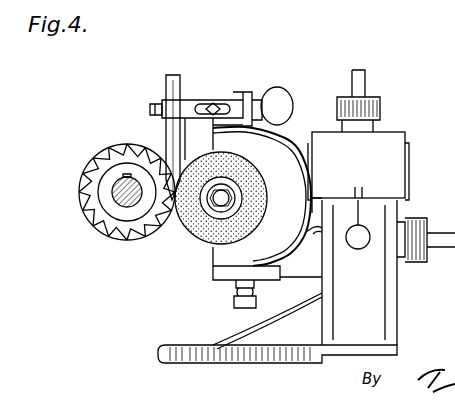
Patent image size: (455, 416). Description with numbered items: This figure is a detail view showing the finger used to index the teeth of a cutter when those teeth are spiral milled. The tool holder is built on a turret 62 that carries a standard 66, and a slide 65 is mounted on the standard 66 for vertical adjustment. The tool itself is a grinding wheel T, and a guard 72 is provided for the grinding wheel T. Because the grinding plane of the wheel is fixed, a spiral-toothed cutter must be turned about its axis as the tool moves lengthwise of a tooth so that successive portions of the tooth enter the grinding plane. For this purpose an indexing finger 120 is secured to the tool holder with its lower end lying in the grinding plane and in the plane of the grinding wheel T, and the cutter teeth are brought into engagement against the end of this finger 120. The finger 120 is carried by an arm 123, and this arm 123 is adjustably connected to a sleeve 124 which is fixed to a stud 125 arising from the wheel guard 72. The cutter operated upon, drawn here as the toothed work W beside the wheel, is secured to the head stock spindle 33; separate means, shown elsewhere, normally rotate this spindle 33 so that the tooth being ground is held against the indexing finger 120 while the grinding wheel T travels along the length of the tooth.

The indexing finger 120 is at (170, 92).
The arm 123 is at (188, 105).
The stud 125 is at (239, 93).
The sleeve 124 is at (251, 98).
The guard 72 is at (294, 147).
The slide 65 is at (390, 165).
The standard 66 is at (375, 295).
The turret 62 is at (202, 355).
The grinding wheel T is at (205, 237).
The work gear W is at (102, 230).
The head stock spindle 33 is at (116, 190).